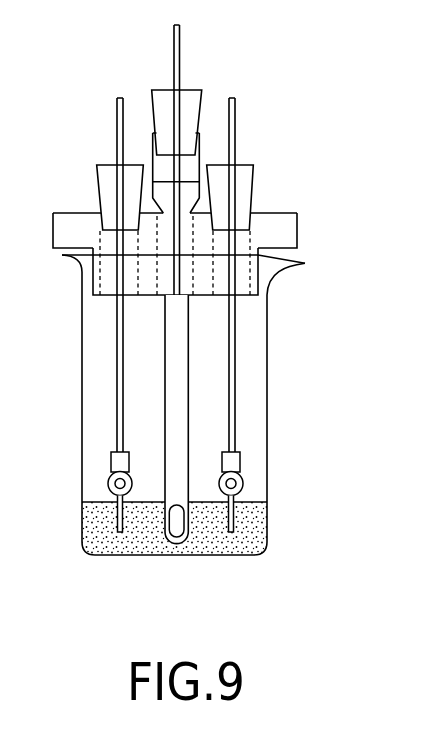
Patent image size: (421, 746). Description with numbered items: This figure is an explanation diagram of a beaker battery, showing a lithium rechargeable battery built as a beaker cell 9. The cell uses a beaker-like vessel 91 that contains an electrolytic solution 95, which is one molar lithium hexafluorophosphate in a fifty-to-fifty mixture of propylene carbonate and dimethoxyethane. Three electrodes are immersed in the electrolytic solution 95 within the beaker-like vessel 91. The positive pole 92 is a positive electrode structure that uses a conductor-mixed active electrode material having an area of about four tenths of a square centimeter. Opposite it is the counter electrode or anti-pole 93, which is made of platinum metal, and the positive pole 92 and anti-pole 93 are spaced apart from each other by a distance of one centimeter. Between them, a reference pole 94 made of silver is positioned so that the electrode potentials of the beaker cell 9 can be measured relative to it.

The beaker cell 9 is at (174, 319).
The beaker-like vessel 91 is at (267, 390).
The positive pole 92 is at (117, 522).
The counter electrode (anti-pole) 93 is at (233, 522).
The reference pole 94 is at (175, 545).
The electrolytic solution 95 is at (207, 543).